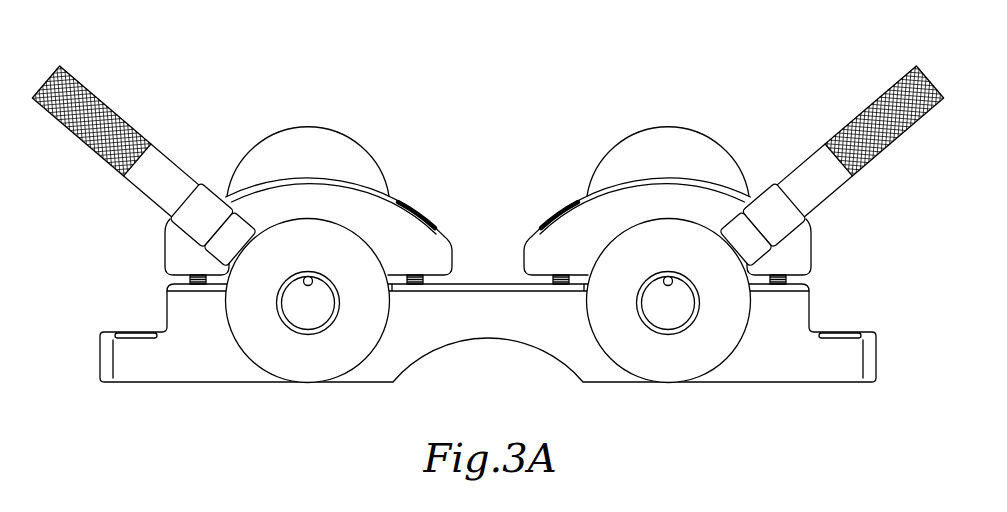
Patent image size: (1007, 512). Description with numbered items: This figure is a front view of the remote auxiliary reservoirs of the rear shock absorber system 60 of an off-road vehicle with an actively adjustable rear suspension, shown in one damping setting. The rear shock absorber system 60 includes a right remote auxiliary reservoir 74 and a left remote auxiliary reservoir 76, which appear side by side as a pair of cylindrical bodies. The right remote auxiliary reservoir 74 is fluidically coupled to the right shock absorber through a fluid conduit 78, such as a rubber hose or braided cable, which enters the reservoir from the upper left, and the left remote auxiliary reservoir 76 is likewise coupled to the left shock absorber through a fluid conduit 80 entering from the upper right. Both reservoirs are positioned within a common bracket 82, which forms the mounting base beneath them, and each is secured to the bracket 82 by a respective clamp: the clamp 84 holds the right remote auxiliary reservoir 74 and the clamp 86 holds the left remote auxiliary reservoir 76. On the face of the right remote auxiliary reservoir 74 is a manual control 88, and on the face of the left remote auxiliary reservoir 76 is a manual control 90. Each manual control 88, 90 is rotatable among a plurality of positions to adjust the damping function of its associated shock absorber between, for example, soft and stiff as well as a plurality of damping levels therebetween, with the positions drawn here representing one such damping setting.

The rear shock absorber system 60 is at (343, 128).
The right remote auxiliary reservoir 74 is at (272, 152).
The left remote auxiliary reservoir 76 is at (704, 152).
The fluid conduit 78 is at (98, 107).
The fluid conduit 80 is at (878, 107).
The bracket 82 is at (177, 372).
The clamp 84 is at (397, 216).
The clamp 86 is at (579, 216).
The manual control 88 is at (305, 317).
The manual control 90 is at (671, 317).